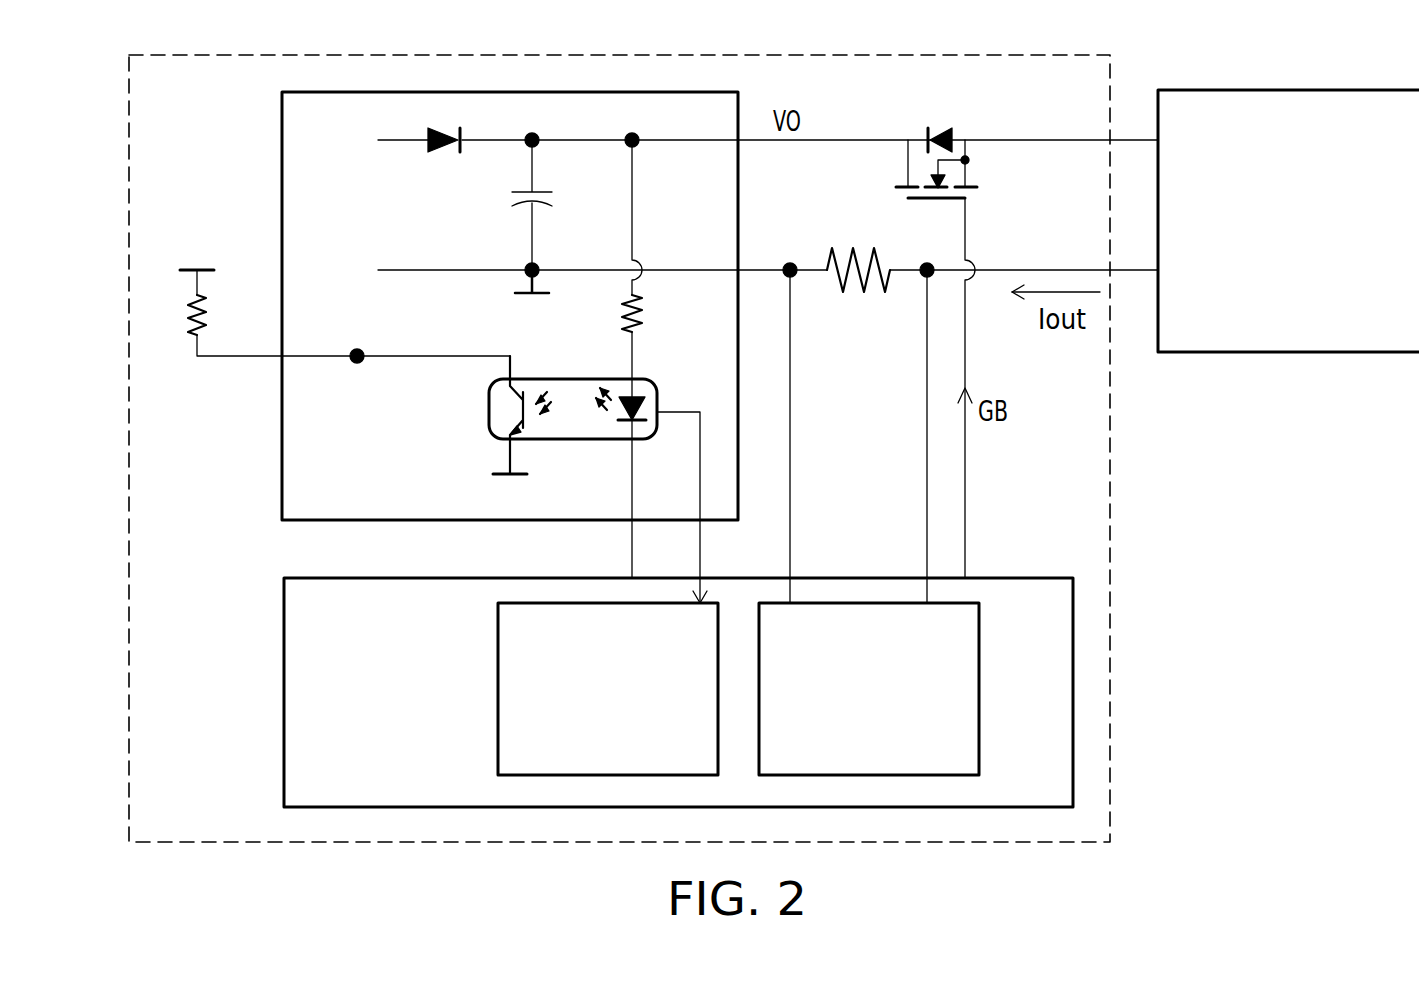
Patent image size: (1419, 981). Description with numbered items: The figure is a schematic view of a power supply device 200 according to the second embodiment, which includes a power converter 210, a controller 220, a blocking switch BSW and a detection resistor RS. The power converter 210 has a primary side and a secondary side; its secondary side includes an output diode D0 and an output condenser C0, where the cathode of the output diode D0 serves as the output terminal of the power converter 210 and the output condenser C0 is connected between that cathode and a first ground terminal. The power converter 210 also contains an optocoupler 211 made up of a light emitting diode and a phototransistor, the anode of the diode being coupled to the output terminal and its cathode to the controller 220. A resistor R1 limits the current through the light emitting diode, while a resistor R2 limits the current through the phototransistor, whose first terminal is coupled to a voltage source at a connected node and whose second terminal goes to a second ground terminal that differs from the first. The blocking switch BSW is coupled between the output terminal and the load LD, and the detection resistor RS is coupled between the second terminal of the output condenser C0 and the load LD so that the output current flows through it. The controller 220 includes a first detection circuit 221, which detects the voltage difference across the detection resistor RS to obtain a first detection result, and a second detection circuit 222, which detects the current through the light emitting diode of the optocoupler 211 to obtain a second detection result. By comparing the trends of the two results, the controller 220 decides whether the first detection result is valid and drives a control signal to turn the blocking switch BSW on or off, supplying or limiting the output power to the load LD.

The power supply device 200 is at (129, 188).
The power converter 210 is at (282, 163).
The optocoupler 211 is at (603, 441).
The controller 220 is at (284, 662).
The first detection circuit 221 is at (980, 688).
The second detection circuit 222 is at (498, 688).
The output diode D0 is at (445, 160).
The output condenser C0 is at (551, 205).
The resistor R1 is at (648, 233).
The resistor R2 is at (331, 313).
The blocking switch BSW is at (936, 145).
The detection resistor RS is at (858, 252).
The load LD is at (1293, 90).